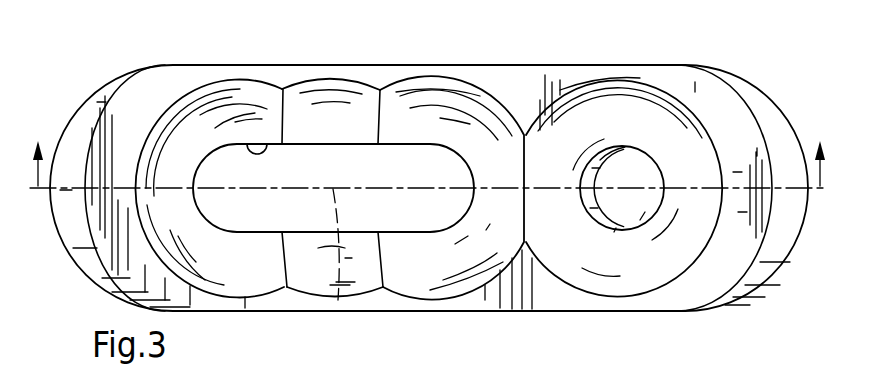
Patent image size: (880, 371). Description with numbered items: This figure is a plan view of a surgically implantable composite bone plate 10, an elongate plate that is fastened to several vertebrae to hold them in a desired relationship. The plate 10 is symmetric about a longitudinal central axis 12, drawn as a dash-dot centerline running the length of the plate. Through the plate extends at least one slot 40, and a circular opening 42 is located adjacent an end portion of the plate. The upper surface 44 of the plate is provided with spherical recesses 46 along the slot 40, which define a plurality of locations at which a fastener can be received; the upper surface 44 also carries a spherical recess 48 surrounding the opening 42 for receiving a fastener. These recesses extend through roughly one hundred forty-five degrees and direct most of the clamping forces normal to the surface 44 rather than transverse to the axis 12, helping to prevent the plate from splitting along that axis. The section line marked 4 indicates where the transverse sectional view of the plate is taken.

The composite bone plate 10 is at (362, 50).
The longitudinal central axis 12 is at (335, 313).
The slot 40 is at (247, 142).
The circular opening 42 is at (622, 171).
The upper surface 44 is at (124, 240).
The spherical recesses 46 is at (422, 110).
The spherical recess 48 is at (597, 120).
The section line 4- 4 is at (429, 151).